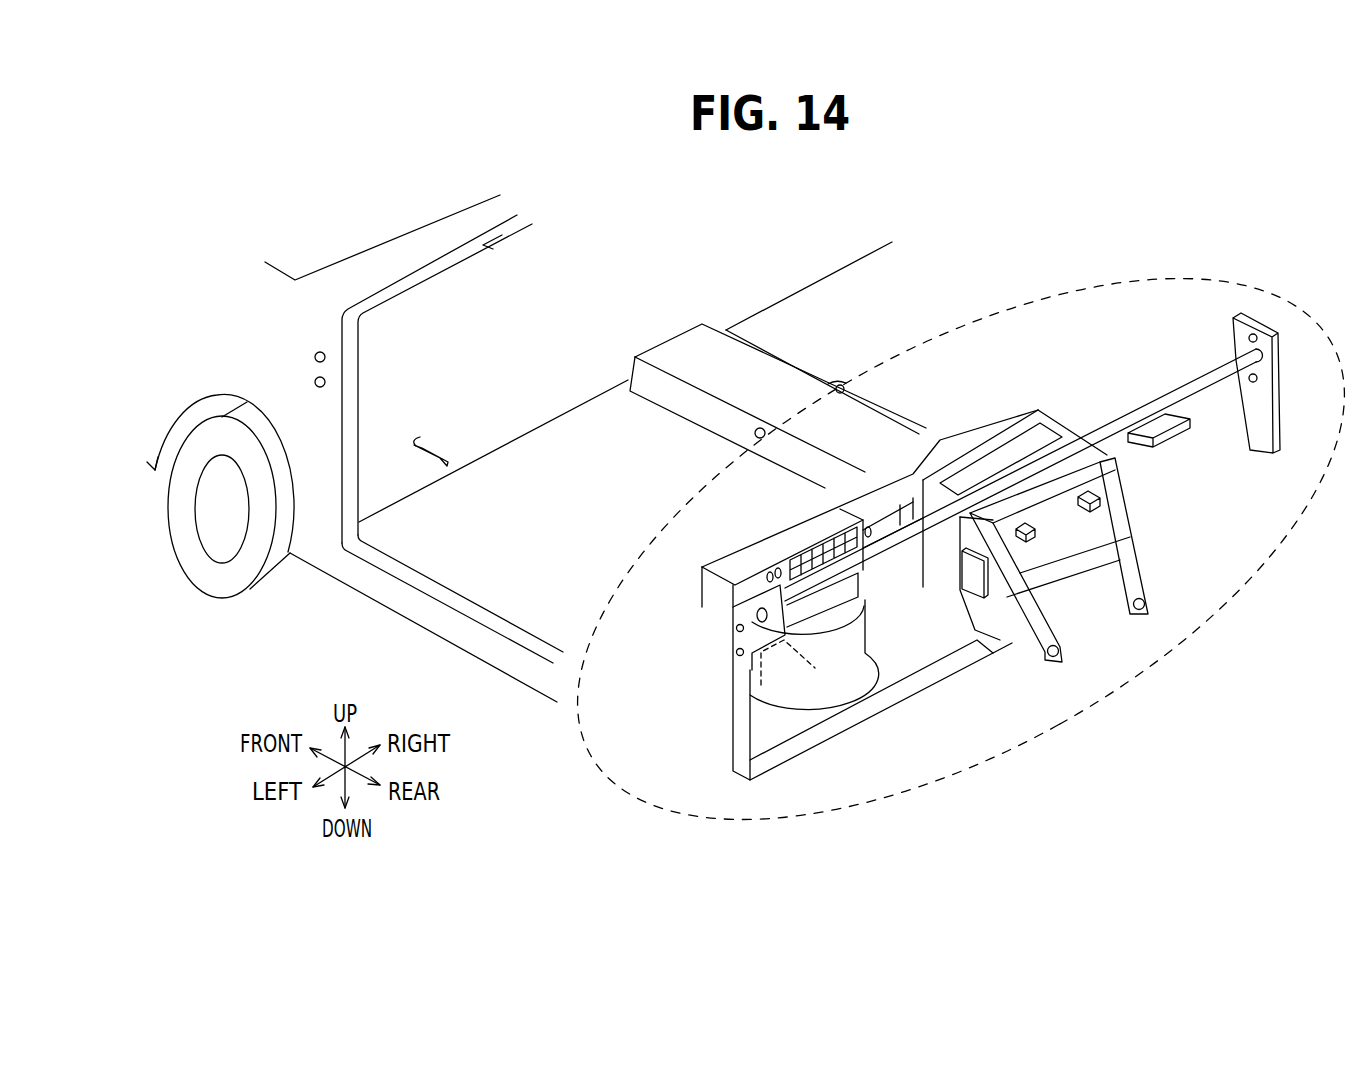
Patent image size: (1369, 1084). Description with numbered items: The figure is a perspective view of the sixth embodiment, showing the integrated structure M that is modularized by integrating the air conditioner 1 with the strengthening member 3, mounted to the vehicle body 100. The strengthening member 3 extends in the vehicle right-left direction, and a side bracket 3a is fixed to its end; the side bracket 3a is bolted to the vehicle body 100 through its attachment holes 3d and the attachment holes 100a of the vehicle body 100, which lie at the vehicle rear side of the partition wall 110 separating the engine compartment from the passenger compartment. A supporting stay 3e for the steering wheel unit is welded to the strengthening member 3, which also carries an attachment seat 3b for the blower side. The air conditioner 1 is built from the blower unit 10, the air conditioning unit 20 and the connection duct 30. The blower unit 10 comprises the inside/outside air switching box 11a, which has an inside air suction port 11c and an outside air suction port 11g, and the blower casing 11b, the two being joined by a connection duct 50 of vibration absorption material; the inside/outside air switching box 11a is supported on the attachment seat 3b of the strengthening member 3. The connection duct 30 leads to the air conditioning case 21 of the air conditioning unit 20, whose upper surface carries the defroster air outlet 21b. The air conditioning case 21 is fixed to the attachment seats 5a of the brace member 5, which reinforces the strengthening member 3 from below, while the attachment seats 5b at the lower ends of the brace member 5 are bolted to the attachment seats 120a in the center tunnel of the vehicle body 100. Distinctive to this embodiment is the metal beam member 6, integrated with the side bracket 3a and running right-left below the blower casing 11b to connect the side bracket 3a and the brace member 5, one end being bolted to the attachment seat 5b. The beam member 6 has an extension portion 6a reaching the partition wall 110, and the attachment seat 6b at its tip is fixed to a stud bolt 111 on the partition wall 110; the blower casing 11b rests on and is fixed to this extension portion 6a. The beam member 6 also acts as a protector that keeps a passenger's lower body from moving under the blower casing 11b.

The vehicle body 100 is at (372, 277).
The attachment holes 100a is at (315, 380).
The partition wall 110 is at (545, 252).
The stud bolt 111 is at (414, 440).
The attachment seats 120a is at (756, 430).
The air conditioner 1 is at (805, 860).
The strengthening member 3 is at (1186, 390).
The side bracket 3a is at (740, 690).
The attachment seat 3b is at (867, 527).
The attachment holes 3d is at (736, 633).
The supporting stay 3e is at (1150, 423).
The brace member 5 is at (1150, 572).
The attachment seats 5a is at (1097, 495).
The attachment seats 5b is at (1053, 658).
The beam member 6 is at (938, 660).
The extension portion 6a is at (792, 720).
The attachment seat 6b is at (755, 712).
The blower unit 10 is at (826, 698).
The inside/outside air switching box 11a is at (742, 580).
The blower casing 11b is at (736, 628).
The inside air suction port 11c is at (800, 517).
The outside air suction port 11g is at (783, 557).
The air conditioning unit 20 is at (997, 648).
The air conditioning case 21 is at (1068, 587).
The defroster air outlet 21b is at (1005, 455).
The connection duct 30 is at (887, 590).
The connection duct 50 is at (823, 598).
The integrated structure M is at (1025, 736).